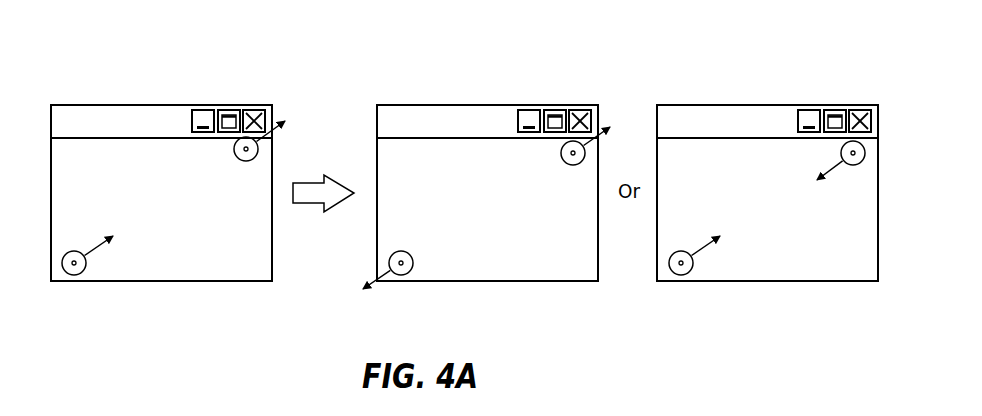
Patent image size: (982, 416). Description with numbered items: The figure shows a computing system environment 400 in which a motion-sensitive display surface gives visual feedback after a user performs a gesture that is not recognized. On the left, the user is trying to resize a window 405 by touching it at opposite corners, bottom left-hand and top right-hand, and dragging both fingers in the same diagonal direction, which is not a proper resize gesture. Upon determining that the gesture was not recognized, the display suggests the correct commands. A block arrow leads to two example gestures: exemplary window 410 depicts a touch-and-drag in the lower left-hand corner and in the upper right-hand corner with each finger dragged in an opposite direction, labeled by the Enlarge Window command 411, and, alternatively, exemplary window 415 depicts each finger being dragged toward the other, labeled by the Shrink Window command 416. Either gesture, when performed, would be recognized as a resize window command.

The computing system environment 400 is at (403, 63).
The window 405 is at (158, 282).
The exemplary window 410 is at (487, 281).
The Enlarge Window command label 411 is at (487, 105).
The exemplary window 415 is at (767, 281).
The Shrink Window command label 416 is at (748, 105).